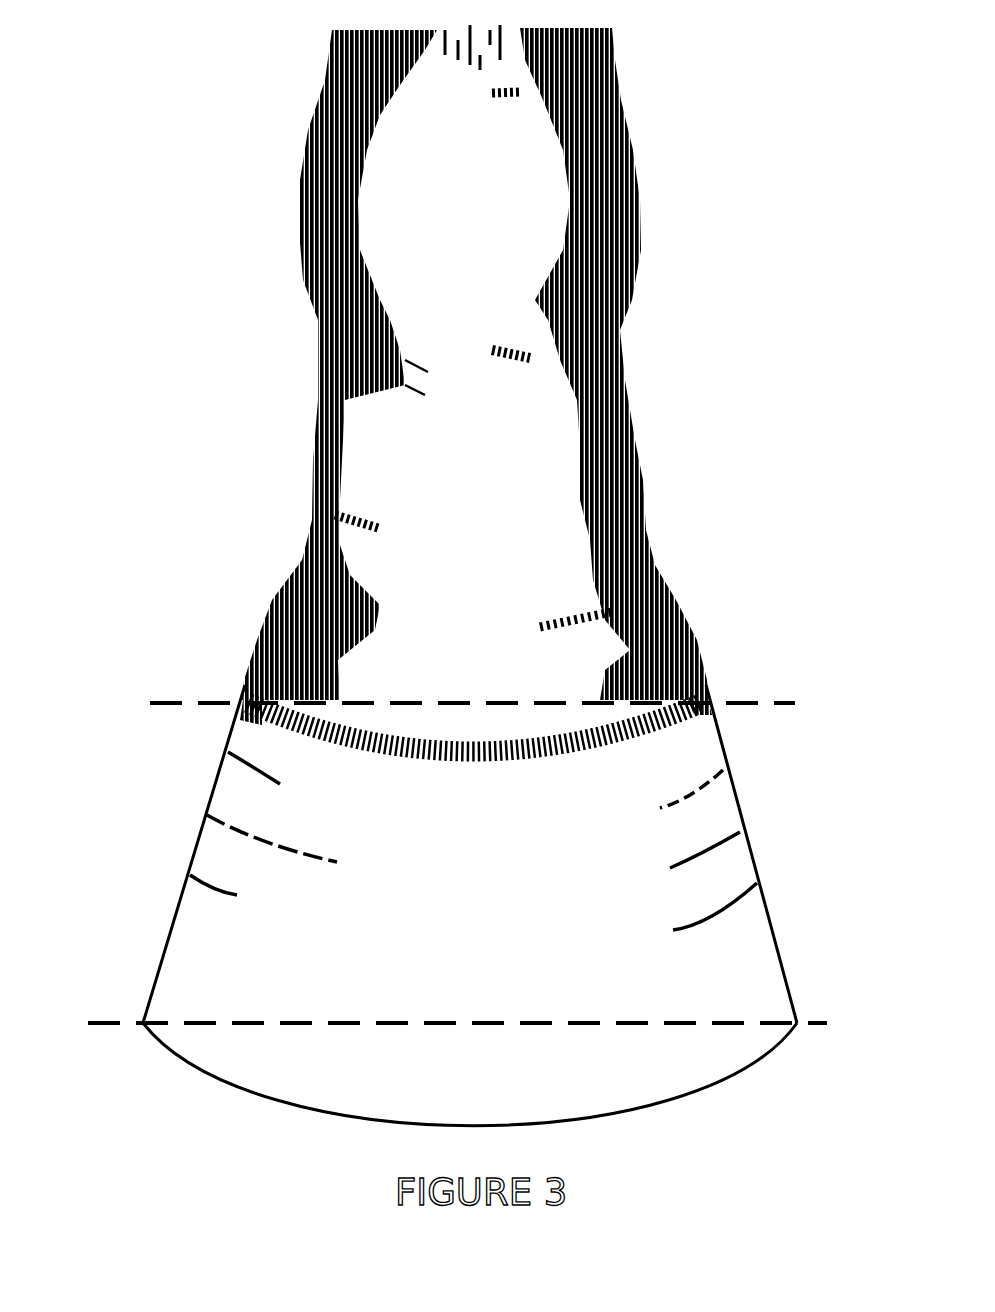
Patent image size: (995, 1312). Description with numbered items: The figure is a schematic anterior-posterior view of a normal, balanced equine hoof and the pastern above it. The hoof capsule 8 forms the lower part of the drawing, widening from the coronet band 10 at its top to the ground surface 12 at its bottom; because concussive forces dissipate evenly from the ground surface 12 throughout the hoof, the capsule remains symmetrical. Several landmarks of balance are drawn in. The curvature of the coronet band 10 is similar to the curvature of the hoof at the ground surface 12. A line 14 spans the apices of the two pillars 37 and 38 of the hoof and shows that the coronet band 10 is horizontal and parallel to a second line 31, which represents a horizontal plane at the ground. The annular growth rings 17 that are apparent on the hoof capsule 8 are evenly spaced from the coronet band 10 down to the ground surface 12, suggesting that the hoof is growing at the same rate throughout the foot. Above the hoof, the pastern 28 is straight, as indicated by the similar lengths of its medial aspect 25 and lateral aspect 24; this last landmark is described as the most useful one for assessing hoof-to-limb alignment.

The hoof capsule 8 is at (273, 983).
The coronet band 10 is at (250, 680).
The ground surface 12 is at (690, 1082).
The line 14 is at (474, 712).
The annular growth rings 17 is at (755, 882).
The lateral aspect 24 is at (310, 463).
The medial aspect 25 is at (652, 482).
The pastern 28 is at (512, 582).
The line 31 is at (468, 1032).
The pillar 37 is at (692, 742).
The pillar 38 is at (250, 722).